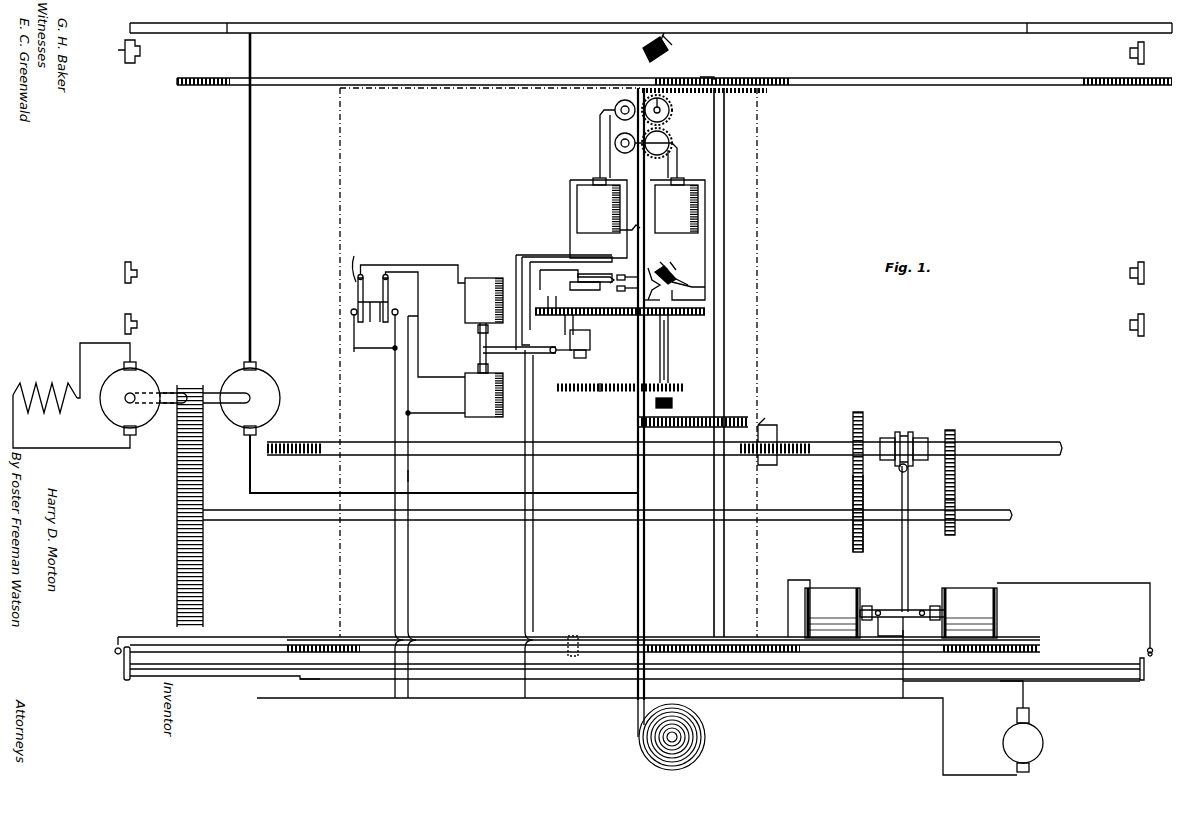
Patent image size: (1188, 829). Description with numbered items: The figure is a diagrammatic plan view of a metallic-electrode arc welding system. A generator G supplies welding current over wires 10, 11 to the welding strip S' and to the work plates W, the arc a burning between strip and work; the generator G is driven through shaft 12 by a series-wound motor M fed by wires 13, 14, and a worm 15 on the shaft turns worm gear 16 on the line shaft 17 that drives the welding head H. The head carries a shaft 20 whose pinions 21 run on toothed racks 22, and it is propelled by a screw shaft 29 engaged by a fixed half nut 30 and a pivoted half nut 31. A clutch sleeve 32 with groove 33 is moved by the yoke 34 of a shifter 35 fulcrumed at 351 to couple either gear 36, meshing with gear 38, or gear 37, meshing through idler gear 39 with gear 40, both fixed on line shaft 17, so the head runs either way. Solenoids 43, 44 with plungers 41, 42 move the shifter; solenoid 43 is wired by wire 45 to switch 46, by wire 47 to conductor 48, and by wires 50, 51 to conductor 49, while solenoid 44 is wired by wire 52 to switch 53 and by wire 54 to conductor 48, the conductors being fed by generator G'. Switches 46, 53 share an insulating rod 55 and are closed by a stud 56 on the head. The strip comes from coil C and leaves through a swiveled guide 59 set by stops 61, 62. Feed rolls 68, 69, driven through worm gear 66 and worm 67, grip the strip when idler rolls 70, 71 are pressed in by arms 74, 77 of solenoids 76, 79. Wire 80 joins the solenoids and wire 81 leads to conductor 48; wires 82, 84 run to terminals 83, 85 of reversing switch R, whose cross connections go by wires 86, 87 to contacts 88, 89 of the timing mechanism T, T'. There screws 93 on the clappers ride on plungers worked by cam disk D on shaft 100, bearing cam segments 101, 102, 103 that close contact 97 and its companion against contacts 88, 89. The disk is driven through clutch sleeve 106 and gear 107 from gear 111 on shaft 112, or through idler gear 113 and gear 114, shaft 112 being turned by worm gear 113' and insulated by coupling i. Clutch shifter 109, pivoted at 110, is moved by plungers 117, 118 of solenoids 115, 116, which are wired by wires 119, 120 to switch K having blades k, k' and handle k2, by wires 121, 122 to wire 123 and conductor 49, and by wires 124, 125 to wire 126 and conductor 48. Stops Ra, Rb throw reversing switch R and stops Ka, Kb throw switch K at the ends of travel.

The metal plates (work) W is at (255, 23).
The stop 61 is at (140, 50).
The stop 62 is at (1130, 53).
The toothed racks 22 is at (366, 78).
The guide 59 is at (643, 50).
The arc a is at (673, 44).
The toothed pinions 21 is at (745, 78).
The welding head H is at (760, 153).
The worm gear 66 is at (767, 92).
The welding strip S' is at (651, 394).
The shaft 20 is at (724, 240).
The worm 67 is at (672, 97).
The feed roll 68 is at (669, 116).
The feed roll 69 is at (670, 137).
The idler roll 70 is at (615, 108).
The idler roll 71 is at (628, 153).
The arm 74 is at (600, 137).
The arm 77 is at (672, 166).
The solenoid 76 is at (598, 205).
The wire 82 is at (570, 199).
The wire 80 is at (624, 226).
The solenoid 79 is at (676, 205).
The wire 84 is at (703, 180).
The reversing switch R is at (676, 270).
The timing mechanism T is at (668, 258).
The middle terminal 83 is at (688, 272).
The terminal 85 is at (705, 287).
The wire 86 is at (646, 270).
The wire 87 is at (658, 301).
The contact 88 is at (620, 275).
The contact 89 is at (627, 297).
The contact 97 is at (595, 291).
The cam segment 101 is at (590, 274).
The cam segment 102 is at (570, 295).
The cam disk D is at (540, 272).
The wire 81 is at (535, 257).
The cam segment 103 is at (524, 256).
The shaft 100 is at (586, 325).
The contact T' is at (544, 314).
The gear 107 is at (561, 331).
The clutch sleeve 106 is at (590, 340).
The pivot 110 is at (555, 358).
The gear 111 is at (685, 348).
The shaft 112 is at (668, 355).
The gear 114 is at (672, 385).
The insulating coupling i is at (656, 405).
The idler gear 113 is at (597, 398).
The worm gear 113' is at (692, 413).
The solenoid 115 is at (476, 282).
The solenoid 116 is at (484, 405).
The plunger 117 is at (478, 333).
The plunger 118 is at (478, 368).
The clutch shifter 109 is at (506, 342).
The switch K is at (349, 261).
The blade k is at (373, 299).
The blade k' is at (395, 299).
The handle k2 is at (374, 329).
The wire 119 is at (408, 265).
The wire 120 is at (418, 296).
The wire 121 is at (354, 349).
The wire 122 is at (394, 370).
The wire 123 is at (406, 413).
The wire 124 is at (410, 396).
The wire 125 is at (444, 413).
The wire 126 is at (410, 476).
The screws 93 is at (534, 430).
The series wound motor M is at (122, 420).
The worm 15 is at (184, 390).
The shaft 12 is at (212, 390).
The generator G is at (258, 397).
The worm gear 16 is at (177, 493).
The wire 13 is at (45, 380).
The wire 14 is at (42, 448).
The wire 11 is at (251, 180).
The wire 10 is at (304, 493).
The half nut 30 is at (770, 458).
The screw shaft 29 is at (300, 441).
The complementary half nut 31 is at (770, 425).
The line shaft 17 is at (276, 520).
The gear 36 is at (856, 412).
The gear 38 is at (853, 492).
The clutch sleeve 32 is at (892, 438).
The groove 33 is at (912, 434).
The yoke 34 is at (910, 456).
The fulcrum 351 is at (900, 472).
The shifter 35 is at (908, 538).
The gear 37 is at (956, 430).
The idler gear 39 is at (956, 476).
The gear 40 is at (956, 500).
The wire 51 is at (902, 623).
The plunger 41 is at (866, 606).
The plunger 42 is at (934, 606).
The solenoid 43 is at (826, 592).
The solenoid 44 is at (963, 592).
The wire 45 is at (788, 582).
The wire 52 is at (1075, 618).
The switch 46 is at (132, 655).
The stud 56 is at (572, 636).
The rod 55 is at (1080, 663).
The switch 53 is at (1146, 665).
The wire 47 is at (236, 677).
The wire 54 is at (1076, 680).
The conductor 48 is at (364, 680).
The conductor 49 is at (828, 698).
The wire 50 is at (950, 690).
The generator G' is at (1038, 737).
The coil C is at (706, 740).
The stop Ra is at (136, 264).
The stop Ka is at (136, 318).
The stop Rb is at (1130, 268).
The stop Kb is at (1130, 320).